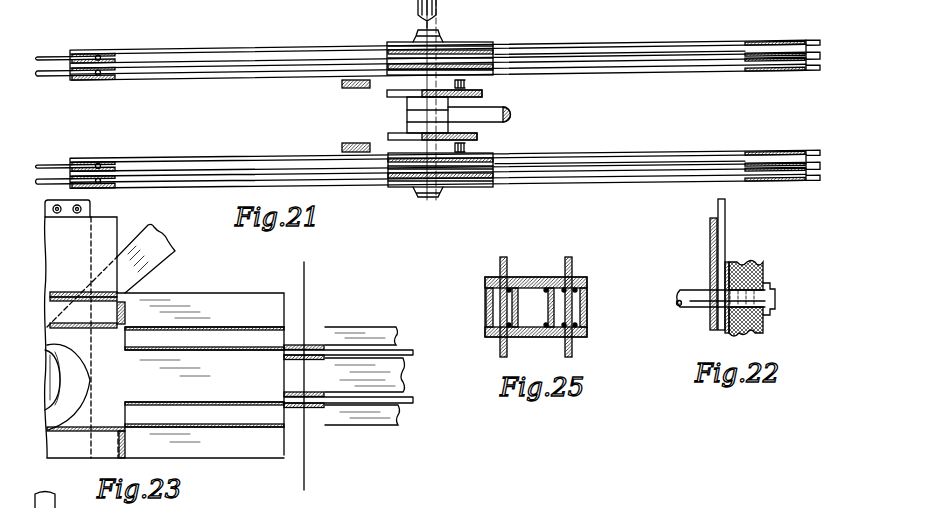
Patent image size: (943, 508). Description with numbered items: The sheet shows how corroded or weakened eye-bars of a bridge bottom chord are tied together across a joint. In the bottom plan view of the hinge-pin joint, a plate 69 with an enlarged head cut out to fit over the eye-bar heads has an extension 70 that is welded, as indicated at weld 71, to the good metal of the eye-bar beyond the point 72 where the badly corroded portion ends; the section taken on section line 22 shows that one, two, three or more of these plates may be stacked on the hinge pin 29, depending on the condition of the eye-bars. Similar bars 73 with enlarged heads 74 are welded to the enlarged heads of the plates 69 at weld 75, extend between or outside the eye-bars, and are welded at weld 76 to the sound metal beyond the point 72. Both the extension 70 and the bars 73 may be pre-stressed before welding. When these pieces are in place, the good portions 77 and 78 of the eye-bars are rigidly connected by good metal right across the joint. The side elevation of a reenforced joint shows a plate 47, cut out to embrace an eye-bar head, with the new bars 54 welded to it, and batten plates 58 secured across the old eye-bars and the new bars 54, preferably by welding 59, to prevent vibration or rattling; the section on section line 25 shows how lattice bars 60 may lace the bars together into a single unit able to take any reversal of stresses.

In FIG. 20, the section line 22 is at (432, 25).
In FIG. 21, the section line 22 is at (432, 103).
In FIG. 23, the section line 25 is at (300, 282).
In FIG. 21, the hinge pin 29 is at (407, 126).
In FIG. 22, the hinge pin 29 is at (689, 311).
In FIG. 23, the plate 47 is at (158, 300).
In FIG. 23, the new bars 54 is at (360, 332).
In FIG. 25, the new bars 54 is at (499, 262).
In FIG. 23, the batten plates 58 is at (312, 350).
In FIG. 25, the batten plates 58 is at (530, 279).
In FIG. 25, the welding 59 is at (570, 285).
In FIG. 23, the lattice bars 60 is at (400, 352).
In FIG. 22, the plate 69 is at (760, 268).
In FIG. 20, the extension 70 is at (252, 78).
In FIG. 21, the extension 70 is at (258, 185).
In FIG. 20, the weld 71 is at (98, 58).
In FIG. 21, the weld 71 is at (97, 166).
In FIG. 20, the point 72 is at (158, 56).
In FIG. 21, the point 72 is at (158, 168).
In FIG. 20, the bars 73 is at (619, 70).
In FIG. 21, the bars 73 is at (620, 178).
In FIG. 20, the enlarged heads 74 is at (518, 66).
In FIG. 21, the enlarged heads 74 is at (514, 178).
In FIG. 22, the enlarged heads 74 is at (762, 272).
In FIG. 20, the weld 75 is at (388, 54).
In FIG. 21, the weld 75 is at (388, 160).
In FIG. 20, the weld 76 is at (761, 44).
In FIG. 21, the weld 76 is at (765, 154).
In FIG. 20, the good portion 77 is at (43, 76).
In FIG. 21, the good portion 77 is at (42, 182).
In FIG. 20, the good portion 78 is at (824, 66).
In FIG. 21, the good portion 78 is at (824, 170).